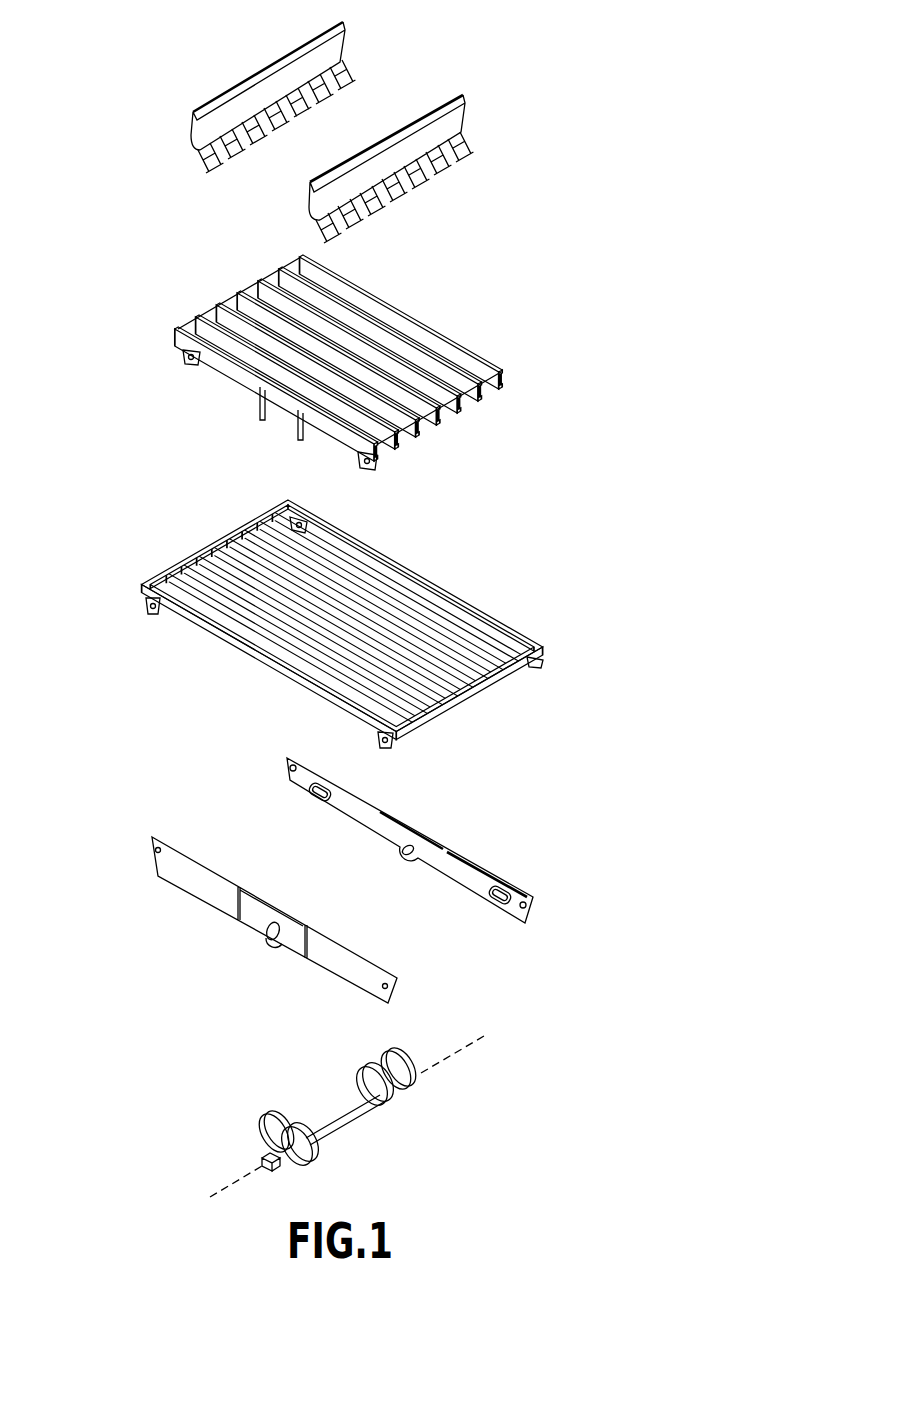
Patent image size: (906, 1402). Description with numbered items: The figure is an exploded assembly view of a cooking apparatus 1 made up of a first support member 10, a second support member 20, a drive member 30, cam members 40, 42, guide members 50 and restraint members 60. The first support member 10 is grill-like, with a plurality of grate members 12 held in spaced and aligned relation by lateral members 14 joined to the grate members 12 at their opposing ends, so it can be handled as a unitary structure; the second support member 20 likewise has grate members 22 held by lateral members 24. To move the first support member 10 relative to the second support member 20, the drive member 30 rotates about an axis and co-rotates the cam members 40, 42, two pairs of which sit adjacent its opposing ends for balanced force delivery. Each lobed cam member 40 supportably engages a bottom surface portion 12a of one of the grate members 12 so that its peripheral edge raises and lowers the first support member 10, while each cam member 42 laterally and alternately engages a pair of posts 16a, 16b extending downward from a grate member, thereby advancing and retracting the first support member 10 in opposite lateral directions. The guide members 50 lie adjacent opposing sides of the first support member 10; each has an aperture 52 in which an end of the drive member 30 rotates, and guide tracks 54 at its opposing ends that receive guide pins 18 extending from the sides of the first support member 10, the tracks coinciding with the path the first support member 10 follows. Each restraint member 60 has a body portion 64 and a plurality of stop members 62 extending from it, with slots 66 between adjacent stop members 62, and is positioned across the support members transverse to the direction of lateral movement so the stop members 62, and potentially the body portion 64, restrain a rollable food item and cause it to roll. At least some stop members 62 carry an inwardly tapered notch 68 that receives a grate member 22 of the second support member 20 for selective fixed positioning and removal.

The cooking apparatus 1 is at (148, 353).
The first support member 10 is at (492, 340).
The grate members 12 is at (462, 407).
The bottom surface portion 12a is at (387, 346).
The lateral members 14 is at (228, 326).
The post 16a is at (262, 404).
The post 16b is at (300, 428).
The guide pins 18 is at (189, 363).
The second support member 20 is at (512, 622).
The grate members 22 is at (498, 647).
The lateral members 24 is at (185, 561).
The drive member 30 is at (330, 1100).
The cam members 40 is at (397, 1108).
The cam members 42 is at (421, 1075).
The guide members 50 is at (530, 882).
The aperture 52 is at (412, 851).
The guide tracks 54 is at (311, 793).
The restraint member 60 is at (360, 62).
The stop members 62 is at (300, 92).
The body portion 64 is at (194, 116).
The slots 66 is at (283, 122).
The notch 68 is at (333, 95).